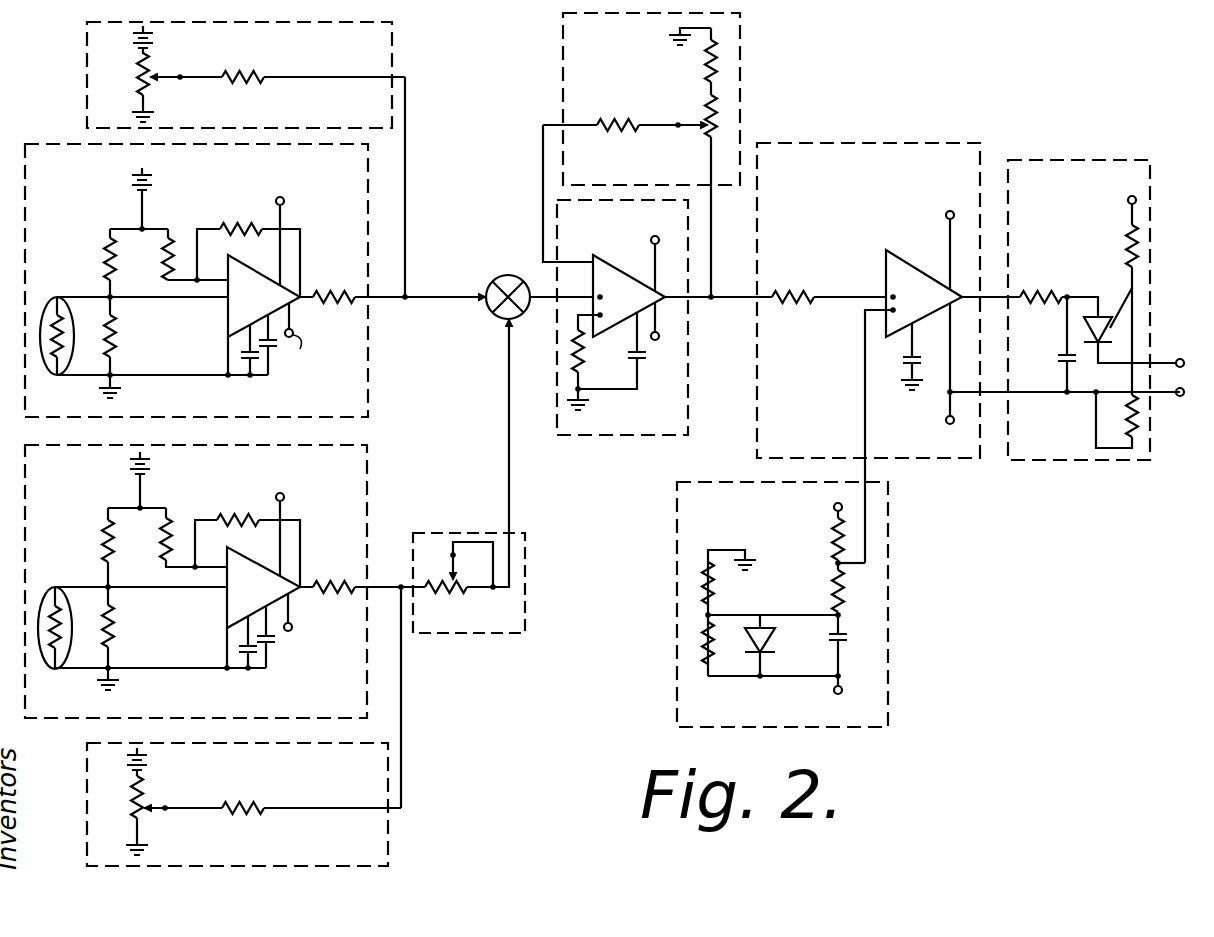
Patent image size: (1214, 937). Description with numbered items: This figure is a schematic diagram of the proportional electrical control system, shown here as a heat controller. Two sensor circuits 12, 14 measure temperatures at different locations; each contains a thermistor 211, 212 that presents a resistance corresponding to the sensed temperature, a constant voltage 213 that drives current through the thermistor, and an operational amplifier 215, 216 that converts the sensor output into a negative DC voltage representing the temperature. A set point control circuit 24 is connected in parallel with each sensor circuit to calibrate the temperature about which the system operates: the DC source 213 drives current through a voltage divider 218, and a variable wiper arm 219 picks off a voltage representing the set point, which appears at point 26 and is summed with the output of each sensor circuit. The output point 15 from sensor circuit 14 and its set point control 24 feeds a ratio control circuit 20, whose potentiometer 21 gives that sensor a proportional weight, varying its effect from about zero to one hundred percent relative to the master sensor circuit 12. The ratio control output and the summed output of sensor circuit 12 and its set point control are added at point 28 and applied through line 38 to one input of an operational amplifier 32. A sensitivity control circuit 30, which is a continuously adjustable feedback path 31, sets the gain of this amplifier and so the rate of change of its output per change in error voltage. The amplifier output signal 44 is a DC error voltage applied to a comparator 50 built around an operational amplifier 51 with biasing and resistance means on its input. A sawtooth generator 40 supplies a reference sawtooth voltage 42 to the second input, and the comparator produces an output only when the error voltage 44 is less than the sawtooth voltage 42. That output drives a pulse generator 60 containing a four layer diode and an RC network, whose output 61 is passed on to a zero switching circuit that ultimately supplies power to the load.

The sensor circuit 12 is at (372, 401).
The sensor circuit 14 is at (370, 466).
The output point 15 is at (394, 584).
The ratio control circuit 20 is at (474, 512).
The potentiometer 21 is at (456, 590).
The set point control circuit 24 is at (394, 62).
The output point of voltage divider 26 is at (407, 206).
The summing point 28 is at (494, 267).
The sensitivity control circuit 30 is at (744, 82).
The feedback path 31 is at (664, 124).
The operational amplifier 32 is at (612, 436).
The multiplier output line 38 is at (538, 305).
The sawtooth generator 40 is at (892, 622).
The reference sawtooth voltage 42 is at (868, 538).
The output signal (error voltage) 44 is at (730, 300).
The comparator 50 is at (926, 143).
The operational amplifier 51 is at (906, 262).
The pulse generator 60 is at (1090, 160).
The output of pulse generator 61 is at (1182, 359).
The thermistor 211 is at (53, 300).
The thermistor 212 is at (51, 593).
The constant voltage source 213 is at (154, 42).
The operational amplifier 215 is at (252, 302).
The operational amplifier 216 is at (252, 590).
The voltage divider 218 is at (138, 70).
The variable wiper arm 219 is at (180, 80).